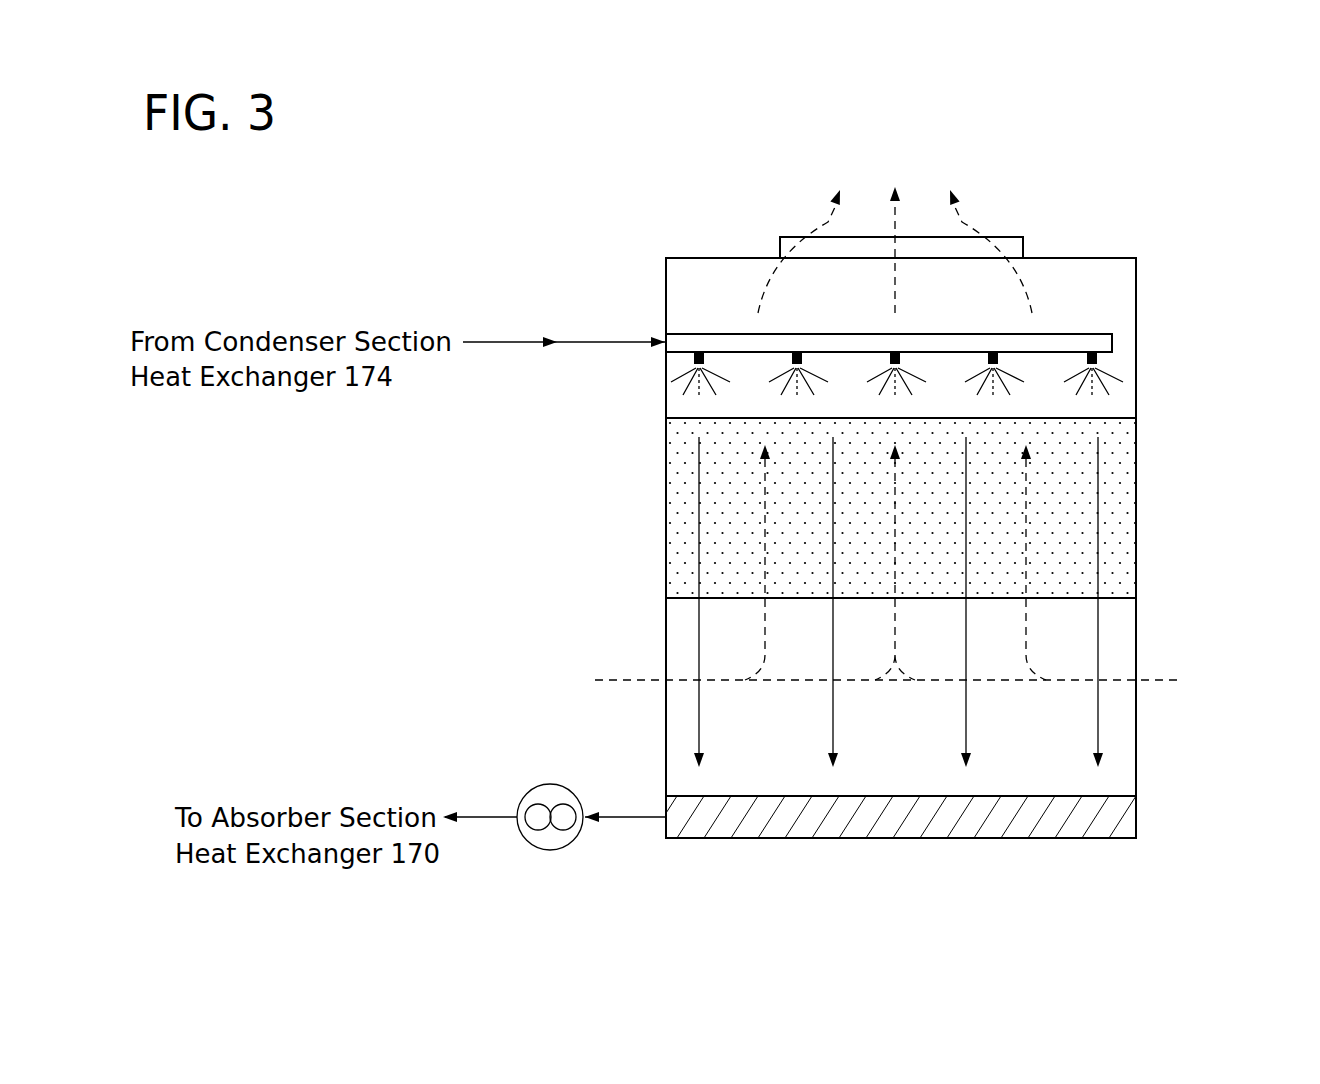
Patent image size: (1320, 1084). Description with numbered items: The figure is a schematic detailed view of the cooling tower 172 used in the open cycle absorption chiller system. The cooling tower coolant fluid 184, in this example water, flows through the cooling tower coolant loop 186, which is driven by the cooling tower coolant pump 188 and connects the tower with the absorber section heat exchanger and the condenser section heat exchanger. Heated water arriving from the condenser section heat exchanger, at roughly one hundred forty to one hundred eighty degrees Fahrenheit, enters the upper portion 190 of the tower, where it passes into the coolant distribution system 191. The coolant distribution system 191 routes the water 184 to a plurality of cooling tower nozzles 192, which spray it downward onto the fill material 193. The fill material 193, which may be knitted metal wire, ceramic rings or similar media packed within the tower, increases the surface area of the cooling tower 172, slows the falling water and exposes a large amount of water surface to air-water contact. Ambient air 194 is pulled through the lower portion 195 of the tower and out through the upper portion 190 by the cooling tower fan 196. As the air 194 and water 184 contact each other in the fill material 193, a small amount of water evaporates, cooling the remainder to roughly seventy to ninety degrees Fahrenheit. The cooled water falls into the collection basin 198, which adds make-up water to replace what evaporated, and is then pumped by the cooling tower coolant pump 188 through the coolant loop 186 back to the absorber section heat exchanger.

The cooling tower 172 is at (879, 864).
The cooling tower coolant fluid 184 is at (1113, 370).
The cooling tower coolant loop 186 is at (615, 342).
The cooling tower coolant pump 188 is at (542, 850).
The upper portion 190 is at (1205, 253).
The coolant distribution system 191 is at (1090, 334).
The cooling tower nozzles 192 is at (787, 351).
The fill material 193 is at (1120, 502).
The ambient air 194 is at (818, 242).
The lower portion 195 is at (1205, 597).
The cooling tower fan 196 is at (1000, 237).
The collection basin 198 is at (1142, 792).